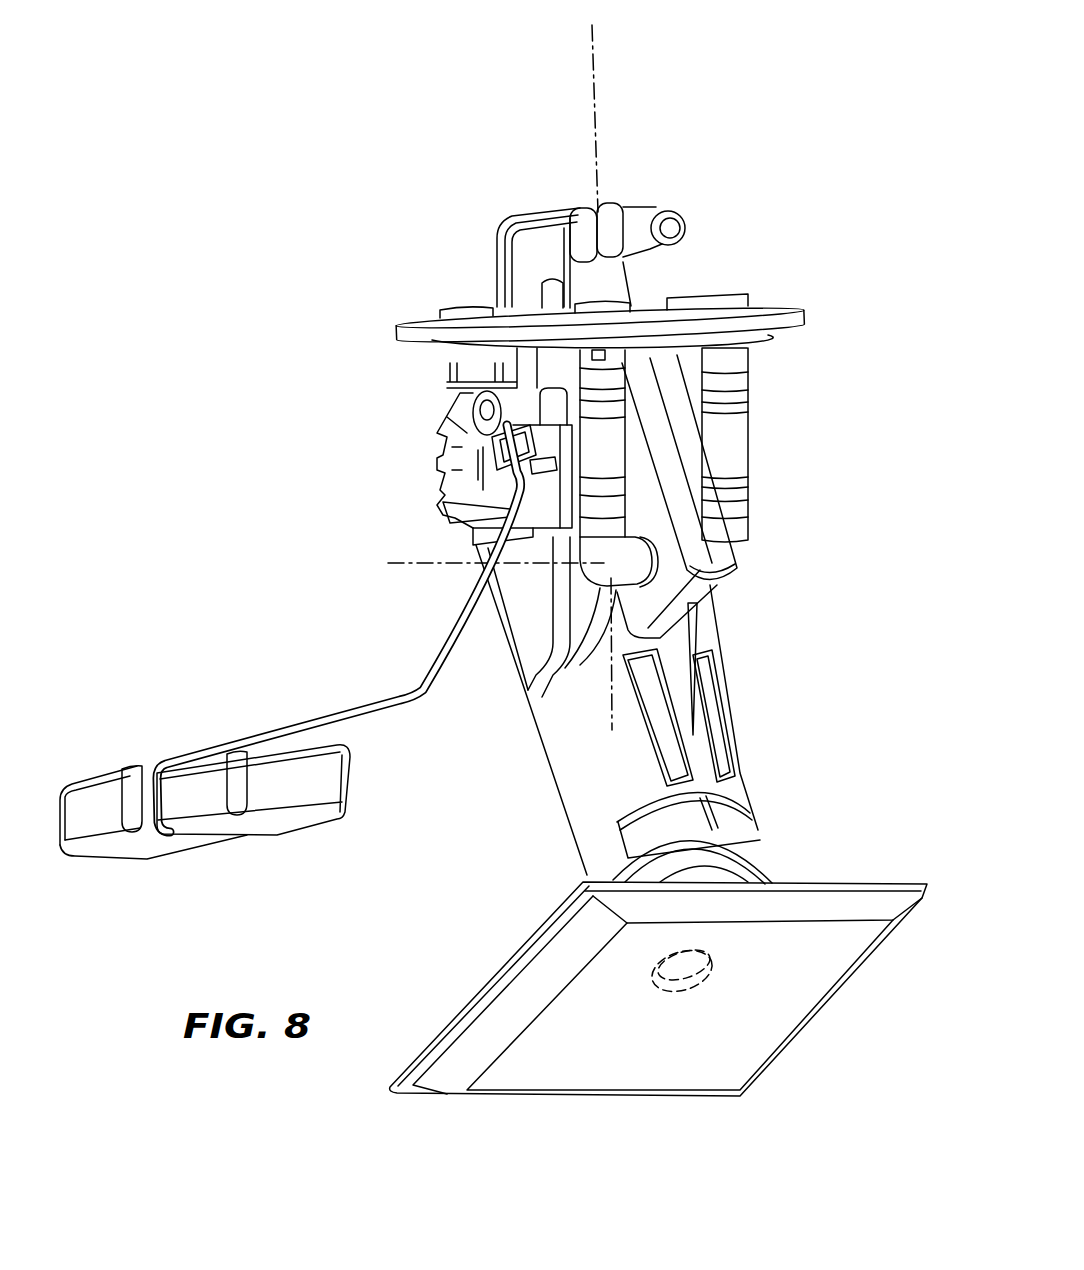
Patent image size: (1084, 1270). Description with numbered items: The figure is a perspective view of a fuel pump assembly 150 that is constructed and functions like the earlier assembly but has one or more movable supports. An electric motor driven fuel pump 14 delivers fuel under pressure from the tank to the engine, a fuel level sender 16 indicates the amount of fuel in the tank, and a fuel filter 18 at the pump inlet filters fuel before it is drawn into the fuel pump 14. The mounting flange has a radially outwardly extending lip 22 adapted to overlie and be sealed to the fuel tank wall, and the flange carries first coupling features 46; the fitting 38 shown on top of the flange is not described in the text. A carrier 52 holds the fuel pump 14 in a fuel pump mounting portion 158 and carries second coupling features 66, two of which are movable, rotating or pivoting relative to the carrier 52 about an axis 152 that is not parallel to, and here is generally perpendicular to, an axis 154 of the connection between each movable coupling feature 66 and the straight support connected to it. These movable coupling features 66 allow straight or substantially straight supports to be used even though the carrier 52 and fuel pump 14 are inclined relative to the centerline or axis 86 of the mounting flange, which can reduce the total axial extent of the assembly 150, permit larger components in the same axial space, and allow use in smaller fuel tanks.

The fuel pump 14 is at (730, 825).
The fuel level sender 16 is at (412, 510).
The fuel filter 18 is at (440, 1100).
The radially outwardly extending lip 22 is at (776, 310).
The fuel outlet fitting 38 is at (639, 208).
The first coupling features 46 is at (610, 367).
The carrier 52 is at (550, 792).
The second coupling features 66 is at (746, 562).
The axis of the mounting flange 86 is at (594, 70).
The fuel pump assembly 150 is at (827, 162).
The axis 152 is at (412, 564).
The axis of the connection 154 is at (612, 703).
The fuel pump mounting portion 158 is at (606, 800).